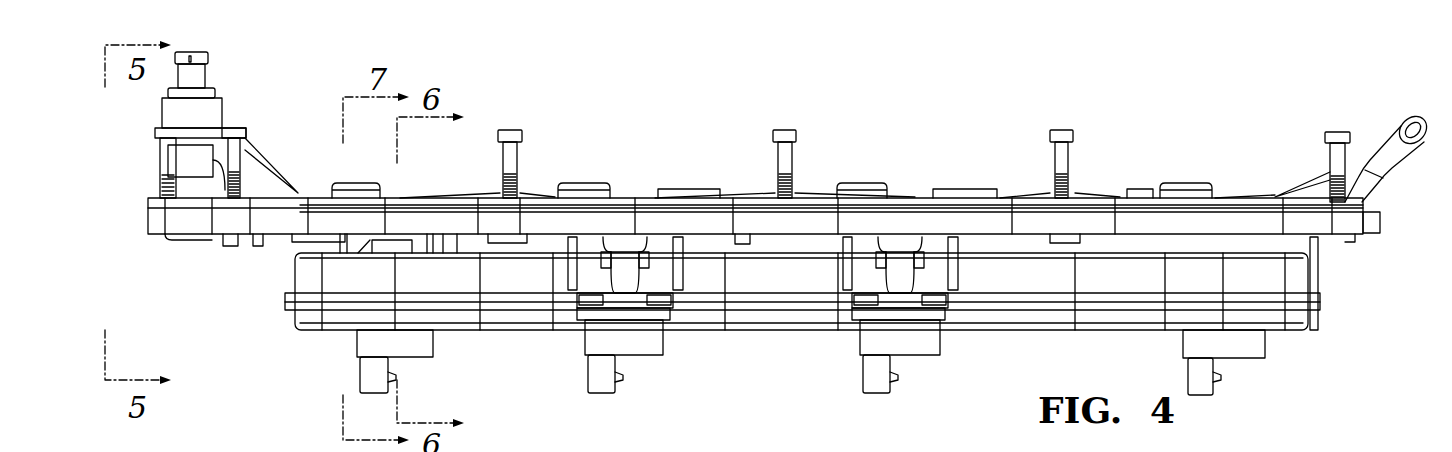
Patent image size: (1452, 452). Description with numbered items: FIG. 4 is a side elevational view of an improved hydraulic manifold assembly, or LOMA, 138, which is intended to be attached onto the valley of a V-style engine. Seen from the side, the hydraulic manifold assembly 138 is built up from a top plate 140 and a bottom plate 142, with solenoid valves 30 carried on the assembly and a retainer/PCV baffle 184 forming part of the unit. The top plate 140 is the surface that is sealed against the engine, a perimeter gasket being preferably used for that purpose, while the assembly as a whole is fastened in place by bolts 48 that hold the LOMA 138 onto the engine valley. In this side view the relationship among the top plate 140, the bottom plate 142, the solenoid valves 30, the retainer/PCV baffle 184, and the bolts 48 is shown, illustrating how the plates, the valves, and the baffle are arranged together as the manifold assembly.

The solenoid valves 30 is at (358, 345).
The bolts 48 is at (244, 131).
The hydraulic manifold assembly 138 is at (963, 166).
The top plate 140 is at (648, 197).
The bottom plate 142 is at (692, 243).
The retainer/PCV baffle 184 is at (1315, 302).